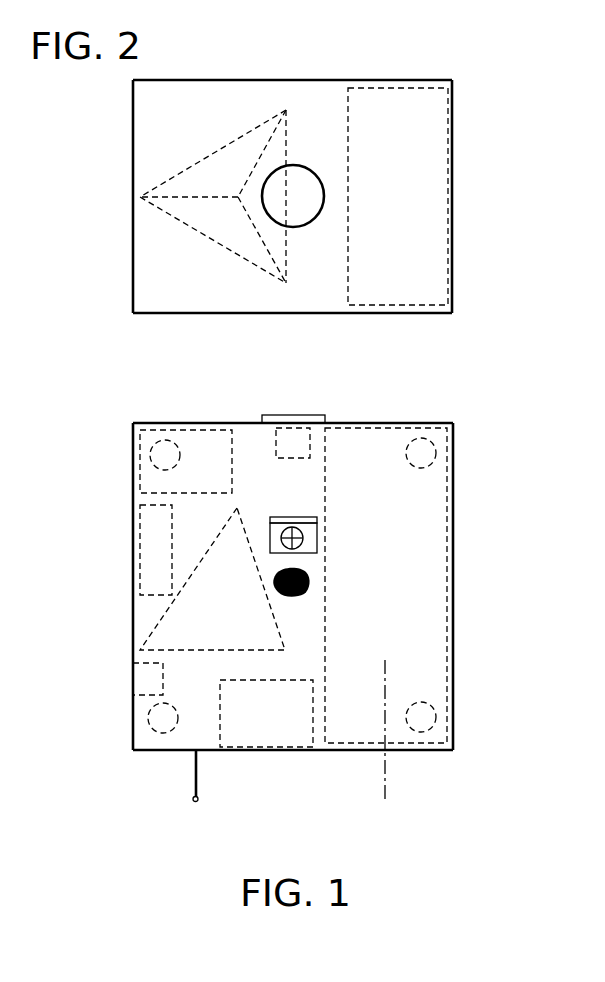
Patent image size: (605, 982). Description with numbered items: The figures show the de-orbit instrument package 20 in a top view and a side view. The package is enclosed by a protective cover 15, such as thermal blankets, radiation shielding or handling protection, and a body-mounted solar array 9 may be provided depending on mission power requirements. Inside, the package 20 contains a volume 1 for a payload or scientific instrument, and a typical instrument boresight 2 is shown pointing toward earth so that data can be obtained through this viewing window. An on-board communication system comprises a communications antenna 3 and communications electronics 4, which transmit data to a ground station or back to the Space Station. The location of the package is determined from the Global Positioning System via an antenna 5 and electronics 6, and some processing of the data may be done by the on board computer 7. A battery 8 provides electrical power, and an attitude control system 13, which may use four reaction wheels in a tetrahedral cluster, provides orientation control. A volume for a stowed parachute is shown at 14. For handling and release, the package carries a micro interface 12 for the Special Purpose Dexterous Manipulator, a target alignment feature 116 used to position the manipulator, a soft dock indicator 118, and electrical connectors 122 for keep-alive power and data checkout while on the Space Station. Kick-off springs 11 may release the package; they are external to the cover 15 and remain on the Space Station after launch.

In FIG. 1, the volume for a payload or scientific instrument 1 is at (341, 546).
In FIG. 1, the instrument boresight 2 is at (439, 743).
In FIG. 1, the communications antenna 3 is at (249, 808).
In FIG. 1, the communications electronics 4 is at (266, 745).
In FIG. 2, the antenna 5 is at (191, 158).
In FIG. 1, the antenna 5 is at (308, 396).
In FIG. 1, the electronics 6 is at (337, 426).
In FIG. 1, the on board computer 7 is at (116, 560).
In FIG. 1, the battery 8 is at (146, 480).
In FIG. 2, the body-mounted solar array 9 is at (292, 56).
In FIG. 1, the kick-off springs 11 is at (299, 586).
In FIG. 1, the micro interface 12 is at (411, 592).
In FIG. 2, the attitude control system 13 is at (205, 238).
In FIG. 1, the attitude control system 13 is at (170, 584).
In FIG. 1, the volume for stowed parachute 14 is at (500, 586).
In FIG. 2, the protective cover 15 is at (292, 227).
In FIG. 1, the protective cover 15 is at (321, 543).
In FIG. 2, the de-orbit instrument package 20 is at (359, 199).
In FIG. 1, the de-orbit instrument package 20 is at (298, 593).
In FIG. 1, the target alignment feature 116 is at (418, 552).
In FIG. 1, the soft dock indicator 118 is at (418, 529).
In FIG. 1, the electrical connectors 122 is at (93, 689).